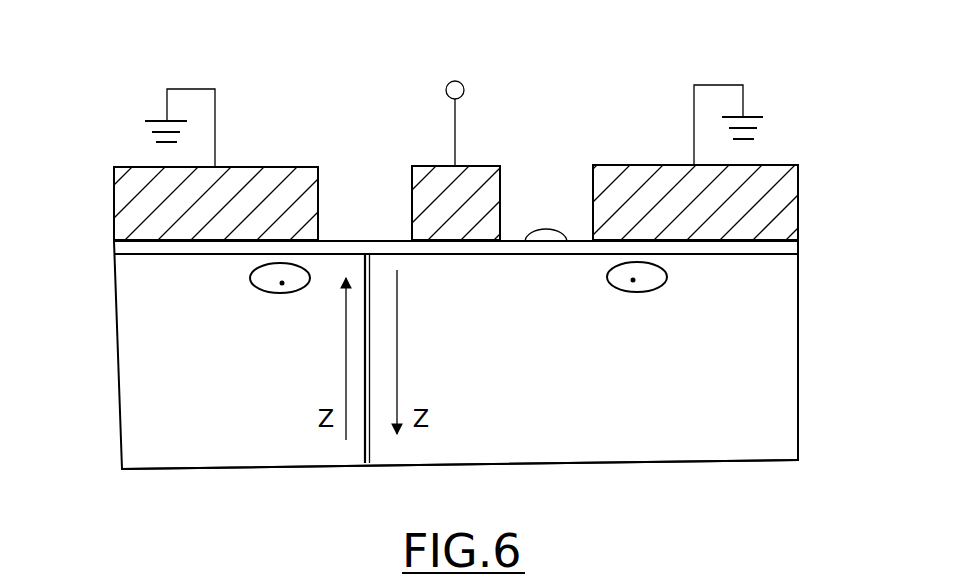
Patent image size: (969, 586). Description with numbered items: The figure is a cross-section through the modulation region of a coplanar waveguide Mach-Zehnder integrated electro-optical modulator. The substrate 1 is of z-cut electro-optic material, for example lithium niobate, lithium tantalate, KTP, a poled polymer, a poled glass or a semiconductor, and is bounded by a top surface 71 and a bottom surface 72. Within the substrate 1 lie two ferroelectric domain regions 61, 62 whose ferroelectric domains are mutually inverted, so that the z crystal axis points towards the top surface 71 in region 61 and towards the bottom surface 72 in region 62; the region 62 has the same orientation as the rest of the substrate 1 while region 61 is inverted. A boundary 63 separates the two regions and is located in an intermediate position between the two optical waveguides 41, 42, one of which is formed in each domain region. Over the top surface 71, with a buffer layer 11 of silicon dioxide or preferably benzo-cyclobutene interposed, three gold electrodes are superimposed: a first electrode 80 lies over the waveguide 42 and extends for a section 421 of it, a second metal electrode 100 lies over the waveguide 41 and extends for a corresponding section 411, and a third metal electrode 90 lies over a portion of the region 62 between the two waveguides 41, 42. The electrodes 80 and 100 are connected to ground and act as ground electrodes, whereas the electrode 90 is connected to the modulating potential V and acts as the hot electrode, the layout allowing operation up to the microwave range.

The substrate 1 is at (147, 477).
The buffer layer 11 is at (342, 247).
The optical waveguide 41 is at (246, 281).
The section of waveguide 411 is at (282, 283).
The optical waveguide 42 is at (672, 279).
The section of waveguide 421 is at (633, 280).
The ferroelectric domain region 61 is at (185, 435).
The ferroelectric domain region 62 is at (770, 435).
The boundary 63 is at (370, 437).
The top surface 71 is at (567, 242).
The bottom surface 72 is at (568, 462).
The first electrode 80 is at (783, 200).
The third metal electrode 90 is at (428, 183).
The second metal electrode 100 is at (122, 212).